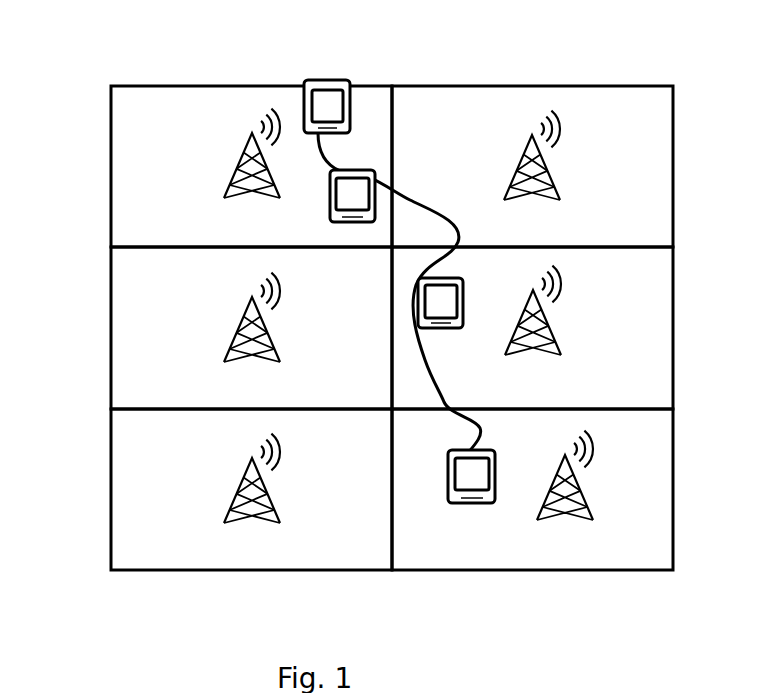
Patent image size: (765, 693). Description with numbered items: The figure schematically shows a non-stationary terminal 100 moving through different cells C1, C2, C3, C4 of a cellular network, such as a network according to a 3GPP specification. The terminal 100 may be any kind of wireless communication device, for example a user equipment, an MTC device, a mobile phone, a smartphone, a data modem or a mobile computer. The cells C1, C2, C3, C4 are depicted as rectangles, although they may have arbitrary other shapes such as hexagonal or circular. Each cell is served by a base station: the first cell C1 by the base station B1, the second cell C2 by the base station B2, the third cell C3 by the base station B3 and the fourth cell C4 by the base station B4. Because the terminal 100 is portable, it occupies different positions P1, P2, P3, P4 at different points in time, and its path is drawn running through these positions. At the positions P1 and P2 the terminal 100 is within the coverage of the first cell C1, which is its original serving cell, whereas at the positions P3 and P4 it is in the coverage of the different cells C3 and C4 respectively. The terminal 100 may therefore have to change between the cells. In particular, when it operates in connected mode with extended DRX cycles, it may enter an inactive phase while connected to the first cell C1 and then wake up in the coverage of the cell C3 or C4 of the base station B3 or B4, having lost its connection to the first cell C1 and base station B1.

The terminal 100 is at (400, 256).
The position P1 is at (304, 92).
The position P2 is at (331, 210).
The position P3 is at (463, 283).
The position P4 is at (492, 477).
The base station B1 is at (243, 157).
The base station B2 is at (512, 173).
The base station B3 is at (536, 292).
The base station B4 is at (565, 455).
The first cell C1 is at (133, 180).
The cell C2 is at (648, 177).
The cell C3 is at (623, 315).
The cell C4 is at (628, 482).